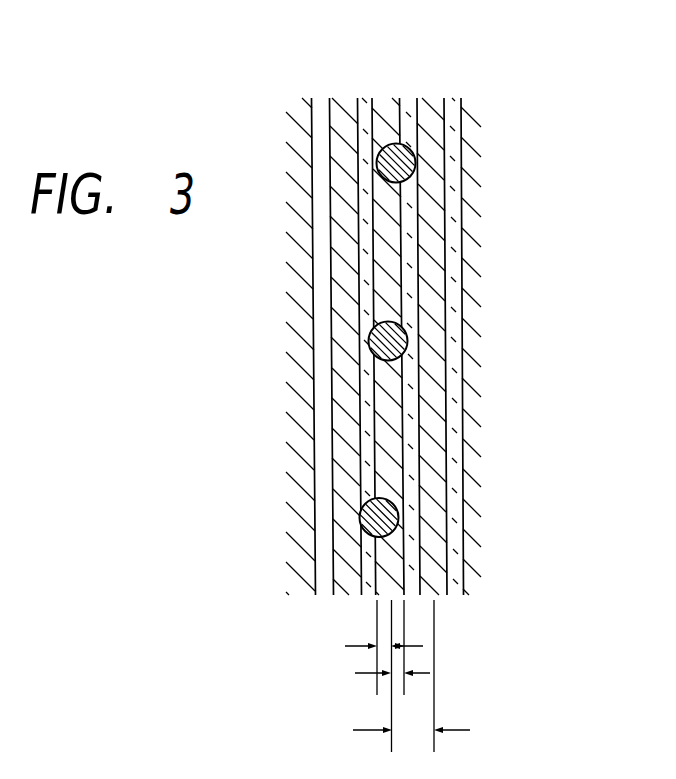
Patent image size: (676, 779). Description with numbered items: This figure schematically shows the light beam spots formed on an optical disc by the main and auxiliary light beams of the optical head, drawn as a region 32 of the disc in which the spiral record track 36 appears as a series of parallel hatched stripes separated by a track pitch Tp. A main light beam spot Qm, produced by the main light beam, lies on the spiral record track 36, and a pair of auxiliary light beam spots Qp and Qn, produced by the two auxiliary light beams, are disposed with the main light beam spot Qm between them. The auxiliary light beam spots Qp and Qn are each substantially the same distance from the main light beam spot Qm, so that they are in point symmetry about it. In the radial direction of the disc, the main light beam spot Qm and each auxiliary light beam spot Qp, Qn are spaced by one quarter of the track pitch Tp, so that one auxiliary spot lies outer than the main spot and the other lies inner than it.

The grating / striped mask 32 is at (326, 72).
The spiral record track 36 is at (429, 106).
The auxiliary light beam spot Qp is at (416, 165).
The main light beam spot Qm is at (368, 344).
The auxiliary light beam spot Qn is at (360, 524).
The track pitch Tp is at (411, 676).